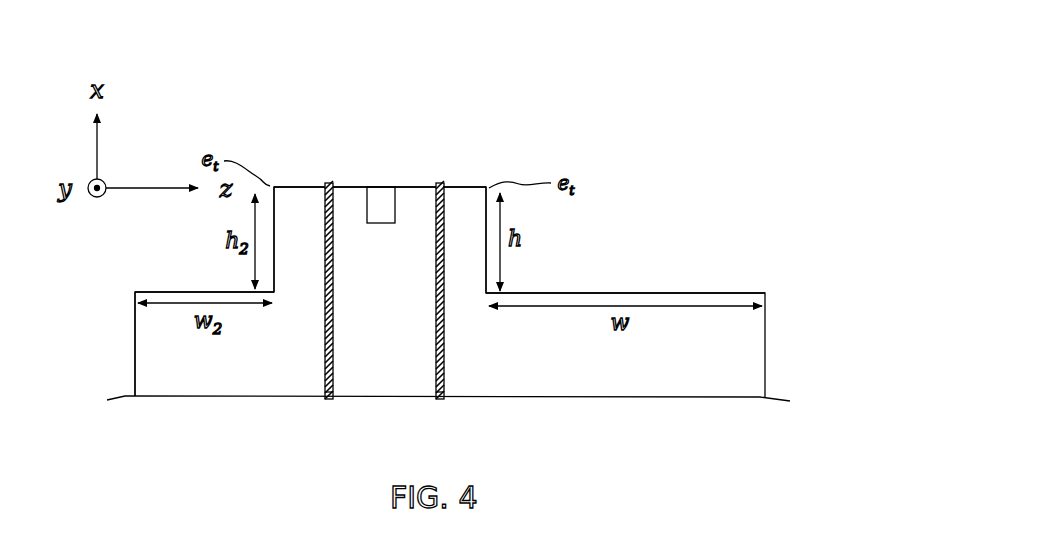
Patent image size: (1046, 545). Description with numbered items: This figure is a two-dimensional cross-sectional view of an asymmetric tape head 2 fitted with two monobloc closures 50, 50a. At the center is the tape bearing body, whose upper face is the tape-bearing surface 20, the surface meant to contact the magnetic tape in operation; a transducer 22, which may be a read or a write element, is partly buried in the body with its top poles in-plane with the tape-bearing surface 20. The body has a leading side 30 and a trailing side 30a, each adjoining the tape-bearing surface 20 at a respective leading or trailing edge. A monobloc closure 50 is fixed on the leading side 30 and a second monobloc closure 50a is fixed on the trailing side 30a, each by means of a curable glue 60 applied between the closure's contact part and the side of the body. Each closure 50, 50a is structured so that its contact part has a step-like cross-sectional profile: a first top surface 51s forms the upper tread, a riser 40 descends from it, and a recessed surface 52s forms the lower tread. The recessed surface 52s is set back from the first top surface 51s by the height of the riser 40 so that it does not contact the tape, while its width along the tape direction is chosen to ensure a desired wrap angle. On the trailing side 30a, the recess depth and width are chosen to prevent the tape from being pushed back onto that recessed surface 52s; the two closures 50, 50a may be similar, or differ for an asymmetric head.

The tape head 2 is at (632, 444).
The tape-bearing surface 20 is at (343, 186).
The transducer 22 is at (388, 205).
The leading side 30 is at (446, 338).
The trailing side 30a is at (323, 333).
The riser 40 is at (281, 200).
The monobloc closure 50 is at (722, 362).
The monobloc closure 50a is at (148, 356).
The top surface of contact part 51s is at (306, 186).
The recessed surface 52s is at (221, 290).
The curable glue 60 is at (325, 398).